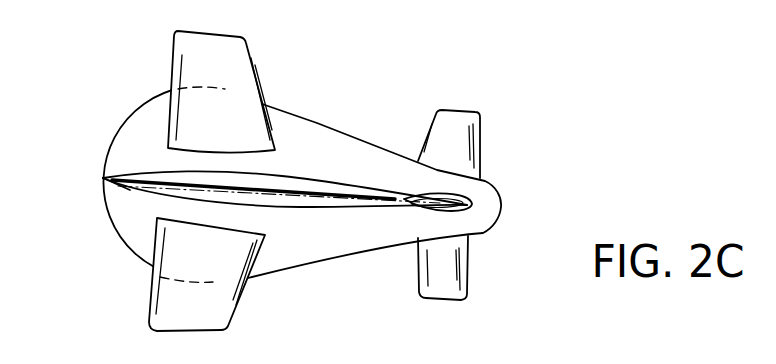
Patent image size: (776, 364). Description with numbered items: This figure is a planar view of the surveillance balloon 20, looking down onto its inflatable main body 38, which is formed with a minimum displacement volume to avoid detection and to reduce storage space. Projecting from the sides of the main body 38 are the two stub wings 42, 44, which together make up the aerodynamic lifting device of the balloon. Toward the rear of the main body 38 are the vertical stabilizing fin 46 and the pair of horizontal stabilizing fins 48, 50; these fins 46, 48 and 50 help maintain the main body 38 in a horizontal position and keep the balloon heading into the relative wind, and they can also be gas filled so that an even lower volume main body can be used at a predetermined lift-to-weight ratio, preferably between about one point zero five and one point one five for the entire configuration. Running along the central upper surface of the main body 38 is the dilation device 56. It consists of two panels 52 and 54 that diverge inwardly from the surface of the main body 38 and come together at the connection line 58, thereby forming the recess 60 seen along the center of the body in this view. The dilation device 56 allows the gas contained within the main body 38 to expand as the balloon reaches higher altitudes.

The surveillance balloon 20 is at (302, 170).
The main body 38 is at (370, 243).
The stub wing 42 is at (213, 309).
The stub wing 44 is at (238, 55).
The vertical stabilizing fin 46 is at (498, 205).
The horizontal stabilizing fin 48 is at (463, 152).
The horizontal stabilizing fin 50 is at (455, 291).
The panel 52 is at (281, 206).
The panel 54 is at (282, 176).
The dilation device 56 is at (163, 172).
The connection line 58 is at (243, 172).
The recess 60 is at (157, 190).